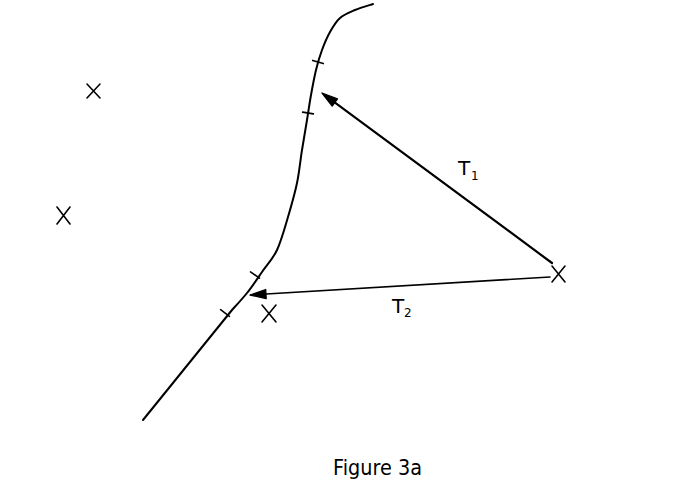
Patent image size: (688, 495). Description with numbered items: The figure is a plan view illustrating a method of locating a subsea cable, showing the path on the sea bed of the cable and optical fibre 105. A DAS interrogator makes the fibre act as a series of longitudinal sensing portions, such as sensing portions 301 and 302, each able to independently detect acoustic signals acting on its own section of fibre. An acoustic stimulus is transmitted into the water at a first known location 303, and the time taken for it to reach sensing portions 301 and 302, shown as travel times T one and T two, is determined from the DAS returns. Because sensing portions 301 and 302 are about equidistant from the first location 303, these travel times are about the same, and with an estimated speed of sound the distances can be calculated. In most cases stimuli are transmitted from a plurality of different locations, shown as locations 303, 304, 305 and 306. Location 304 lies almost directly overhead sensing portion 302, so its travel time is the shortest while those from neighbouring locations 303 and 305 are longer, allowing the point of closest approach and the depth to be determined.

The cable and optical fibre 105 is at (175, 390).
The longitudinal sensing portion 301 is at (322, 83).
The longitudinal sensing portion 302 is at (242, 285).
The first known location 303 is at (562, 287).
The acoustic transmission location 304 is at (270, 327).
The acoustic transmission location 305 is at (60, 228).
The acoustic transmission location 306 is at (83, 82).